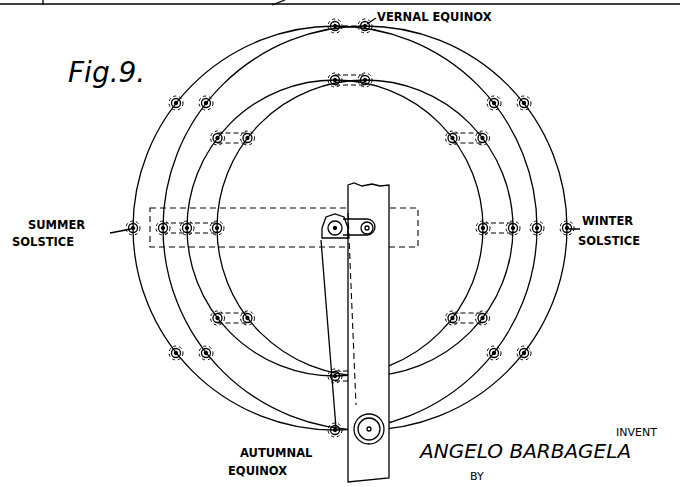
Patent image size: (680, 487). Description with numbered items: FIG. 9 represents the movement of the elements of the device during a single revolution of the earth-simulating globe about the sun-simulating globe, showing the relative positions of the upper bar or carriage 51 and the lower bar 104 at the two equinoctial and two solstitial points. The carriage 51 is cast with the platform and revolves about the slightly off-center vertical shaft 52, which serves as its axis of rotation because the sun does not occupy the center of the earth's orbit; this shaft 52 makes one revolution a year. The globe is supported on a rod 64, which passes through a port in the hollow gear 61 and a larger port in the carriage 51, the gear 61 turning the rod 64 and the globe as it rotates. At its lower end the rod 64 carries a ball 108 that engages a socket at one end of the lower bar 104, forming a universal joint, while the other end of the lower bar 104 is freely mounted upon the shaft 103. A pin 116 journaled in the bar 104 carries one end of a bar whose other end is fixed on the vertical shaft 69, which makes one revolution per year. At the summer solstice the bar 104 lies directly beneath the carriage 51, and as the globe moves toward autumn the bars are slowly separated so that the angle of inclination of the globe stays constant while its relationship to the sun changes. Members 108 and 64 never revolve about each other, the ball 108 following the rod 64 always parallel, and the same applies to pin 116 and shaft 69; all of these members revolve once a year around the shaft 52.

The carriage 51 is at (390, 311).
The vertical shaft 52 is at (367, 236).
The hollow gear 61 is at (370, 445).
The rod 64 is at (367, 29).
The vertical shaft 69 is at (367, 84).
The shaft 103 is at (328, 240).
The lower bar 104 is at (334, 295).
The ball 108 is at (334, 30).
The pin 116 is at (334, 84).